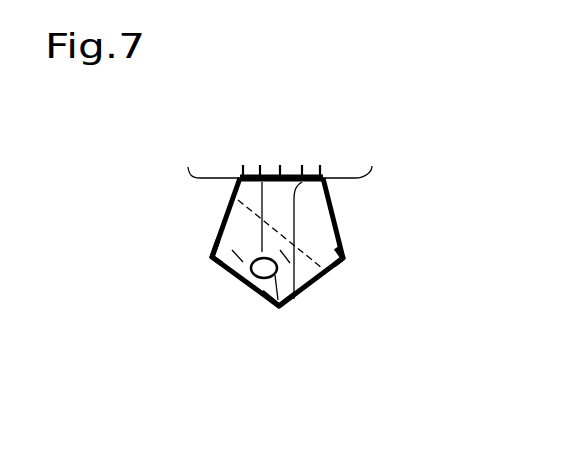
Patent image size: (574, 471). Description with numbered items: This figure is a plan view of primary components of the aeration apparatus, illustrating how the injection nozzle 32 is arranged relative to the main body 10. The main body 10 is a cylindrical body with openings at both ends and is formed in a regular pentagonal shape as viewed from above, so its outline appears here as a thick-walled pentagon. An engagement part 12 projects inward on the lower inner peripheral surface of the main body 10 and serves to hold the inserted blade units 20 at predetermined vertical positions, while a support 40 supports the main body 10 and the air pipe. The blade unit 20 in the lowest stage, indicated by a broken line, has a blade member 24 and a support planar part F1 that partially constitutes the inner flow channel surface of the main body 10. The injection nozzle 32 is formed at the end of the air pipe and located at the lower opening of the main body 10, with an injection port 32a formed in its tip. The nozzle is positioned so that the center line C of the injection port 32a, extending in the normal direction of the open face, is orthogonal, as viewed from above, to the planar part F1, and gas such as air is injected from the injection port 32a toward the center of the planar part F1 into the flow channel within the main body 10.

The main body 10 is at (334, 210).
The engagement part 12 is at (348, 264).
The blade unit 20 is at (288, 175).
The blade member 24 is at (238, 177).
The injection nozzle 32 is at (291, 306).
The injection port 32a is at (272, 306).
The support 40 is at (328, 168).
The planar part F1 is at (208, 253).
The center line C is at (245, 293).